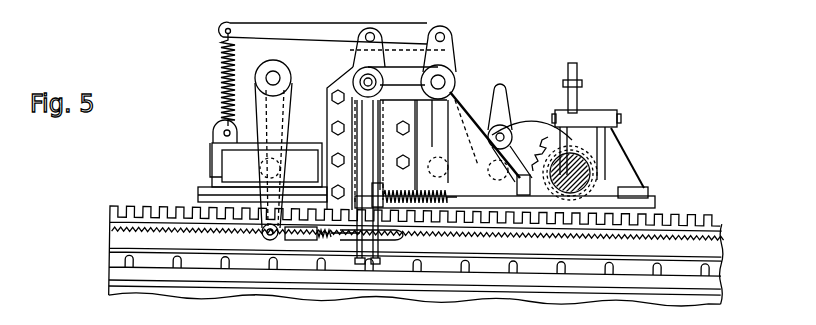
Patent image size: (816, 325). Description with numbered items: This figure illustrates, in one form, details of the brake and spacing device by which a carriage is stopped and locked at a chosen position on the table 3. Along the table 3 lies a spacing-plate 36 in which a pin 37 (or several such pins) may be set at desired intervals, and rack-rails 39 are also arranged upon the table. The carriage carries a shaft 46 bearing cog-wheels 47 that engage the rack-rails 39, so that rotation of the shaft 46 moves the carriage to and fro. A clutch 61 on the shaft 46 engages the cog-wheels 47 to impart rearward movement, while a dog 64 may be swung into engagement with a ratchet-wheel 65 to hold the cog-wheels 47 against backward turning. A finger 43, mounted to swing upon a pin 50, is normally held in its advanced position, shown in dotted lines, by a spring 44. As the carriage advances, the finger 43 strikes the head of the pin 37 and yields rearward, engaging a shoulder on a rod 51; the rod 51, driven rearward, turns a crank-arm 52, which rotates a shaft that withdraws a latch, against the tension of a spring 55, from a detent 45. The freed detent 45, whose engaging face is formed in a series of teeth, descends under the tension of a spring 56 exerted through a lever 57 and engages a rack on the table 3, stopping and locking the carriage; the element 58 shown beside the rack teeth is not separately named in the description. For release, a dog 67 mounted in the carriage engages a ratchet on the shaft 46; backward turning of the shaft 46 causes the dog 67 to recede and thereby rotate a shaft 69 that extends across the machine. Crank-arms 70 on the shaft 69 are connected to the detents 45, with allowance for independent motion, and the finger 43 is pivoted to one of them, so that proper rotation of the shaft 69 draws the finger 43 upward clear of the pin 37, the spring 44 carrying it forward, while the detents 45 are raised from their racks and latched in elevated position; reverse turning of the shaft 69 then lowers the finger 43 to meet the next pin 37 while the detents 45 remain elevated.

The table 3 is at (711, 249).
The spacing-plate 36 is at (724, 285).
The pin 37 is at (708, 268).
The rack-rail 39 is at (693, 219).
The finger 43 is at (365, 264).
The spring 44 is at (432, 200).
The detent 45 is at (356, 212).
The shaft 46 is at (587, 156).
The cog-wheel 47 is at (560, 147).
The pin 50 is at (354, 78).
The rod 51 is at (333, 241).
The crank-arm 52 is at (198, 192).
The spring 55 is at (272, 76).
The spring 56 is at (222, 76).
The lever 57 is at (403, 33).
The ratchet strip 58 is at (665, 236).
The clutch 61 is at (603, 166).
The dog 64 is at (508, 118).
The ratchet-wheel 65 is at (580, 70).
The dog 67 is at (522, 157).
The shaft 69 is at (445, 80).
The crank-arm 70 is at (414, 72).